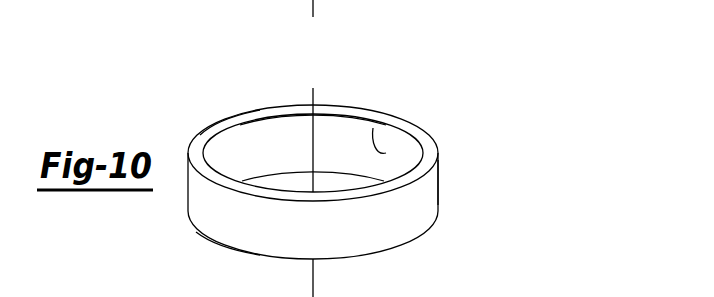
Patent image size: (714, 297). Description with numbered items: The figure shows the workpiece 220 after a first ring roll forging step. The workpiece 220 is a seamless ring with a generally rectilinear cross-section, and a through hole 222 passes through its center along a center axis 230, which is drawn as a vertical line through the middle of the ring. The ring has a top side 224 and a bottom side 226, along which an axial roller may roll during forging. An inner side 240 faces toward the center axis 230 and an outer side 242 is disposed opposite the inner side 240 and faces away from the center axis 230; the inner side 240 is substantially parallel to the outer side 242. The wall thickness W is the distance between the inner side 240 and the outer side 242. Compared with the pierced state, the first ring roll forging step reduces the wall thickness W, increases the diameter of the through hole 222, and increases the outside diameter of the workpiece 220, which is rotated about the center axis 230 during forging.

The workpiece 220 is at (328, 241).
The through hole 222 is at (308, 135).
The top side 224 is at (227, 122).
The bottom side 226 is at (223, 252).
The center axis 230 is at (316, 95).
The inner side 240 is at (386, 153).
The outer side 242 is at (438, 187).
The wall thickness W is at (337, 158).